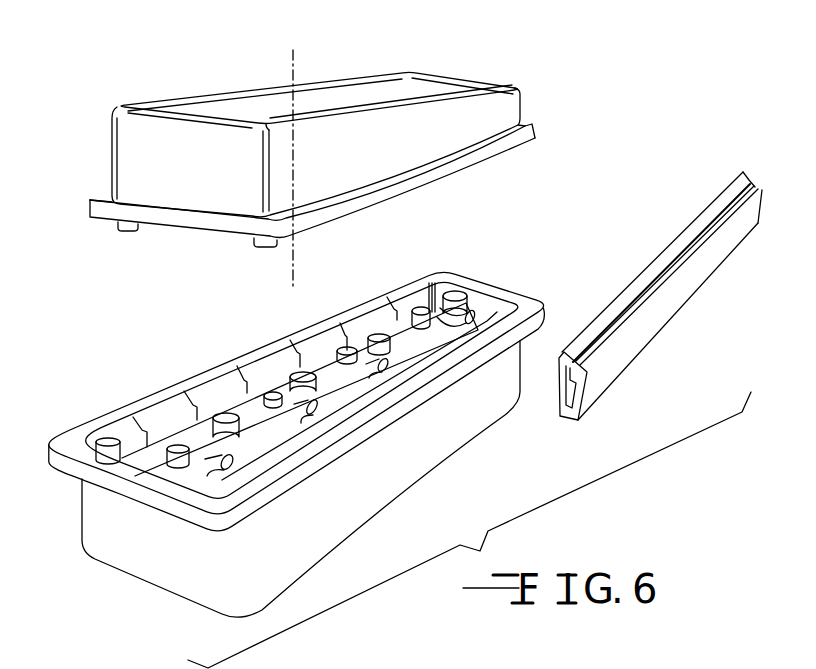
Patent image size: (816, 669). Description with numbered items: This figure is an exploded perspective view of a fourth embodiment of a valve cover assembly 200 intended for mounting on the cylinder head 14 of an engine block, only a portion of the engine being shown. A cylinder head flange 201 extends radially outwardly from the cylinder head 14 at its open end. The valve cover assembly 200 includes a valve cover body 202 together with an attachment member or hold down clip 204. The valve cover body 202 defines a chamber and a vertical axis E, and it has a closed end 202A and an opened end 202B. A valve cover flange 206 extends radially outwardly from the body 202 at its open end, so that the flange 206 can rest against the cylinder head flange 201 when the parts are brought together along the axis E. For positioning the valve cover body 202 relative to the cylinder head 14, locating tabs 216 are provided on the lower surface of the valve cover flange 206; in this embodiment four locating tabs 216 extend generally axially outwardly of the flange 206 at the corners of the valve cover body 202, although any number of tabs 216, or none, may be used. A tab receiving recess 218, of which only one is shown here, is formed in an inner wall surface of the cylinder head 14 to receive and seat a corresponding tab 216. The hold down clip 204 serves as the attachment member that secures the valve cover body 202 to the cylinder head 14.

The cover assembly 200 is at (115, 58).
The cover body 202 is at (242, 92).
The cover top surface 202A is at (403, 85).
The cover base plate 202B is at (421, 184).
The base plate flange edge 206 is at (113, 209).
The feet 216 is at (152, 230).
The tray 14 is at (101, 562).
The tray rim 201 is at (45, 462).
The post 218 is at (114, 441).
The channel rail 204 is at (668, 321).
The section axis E is at (294, 284).